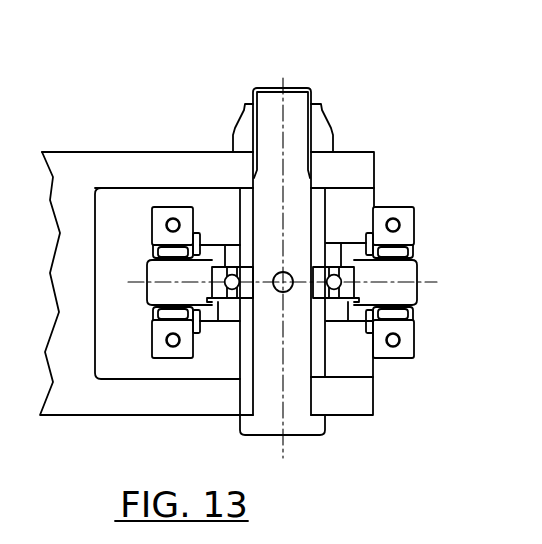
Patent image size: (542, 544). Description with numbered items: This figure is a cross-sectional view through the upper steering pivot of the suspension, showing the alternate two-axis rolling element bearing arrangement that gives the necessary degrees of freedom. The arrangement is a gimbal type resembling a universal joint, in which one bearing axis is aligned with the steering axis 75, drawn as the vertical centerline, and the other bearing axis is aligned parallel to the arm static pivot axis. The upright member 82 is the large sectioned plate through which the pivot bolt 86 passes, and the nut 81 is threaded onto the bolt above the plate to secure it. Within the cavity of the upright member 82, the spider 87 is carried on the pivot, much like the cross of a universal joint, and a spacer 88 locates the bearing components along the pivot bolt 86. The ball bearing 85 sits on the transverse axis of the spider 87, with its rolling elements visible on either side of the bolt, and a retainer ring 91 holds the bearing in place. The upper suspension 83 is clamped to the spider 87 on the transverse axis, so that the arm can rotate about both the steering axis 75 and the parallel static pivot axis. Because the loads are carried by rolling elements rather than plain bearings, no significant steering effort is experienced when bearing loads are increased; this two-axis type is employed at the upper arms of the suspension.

The steering axis 75 is at (282, 84).
The nut 81 is at (325, 122).
The upright member 82 is at (221, 149).
The upper suspension 83 is at (400, 206).
The ball bearing 85 is at (150, 266).
The pivot bolt 86 is at (325, 433).
The spider 87 is at (416, 305).
The spacer 88 is at (238, 203).
The retainer ring 91 is at (218, 302).